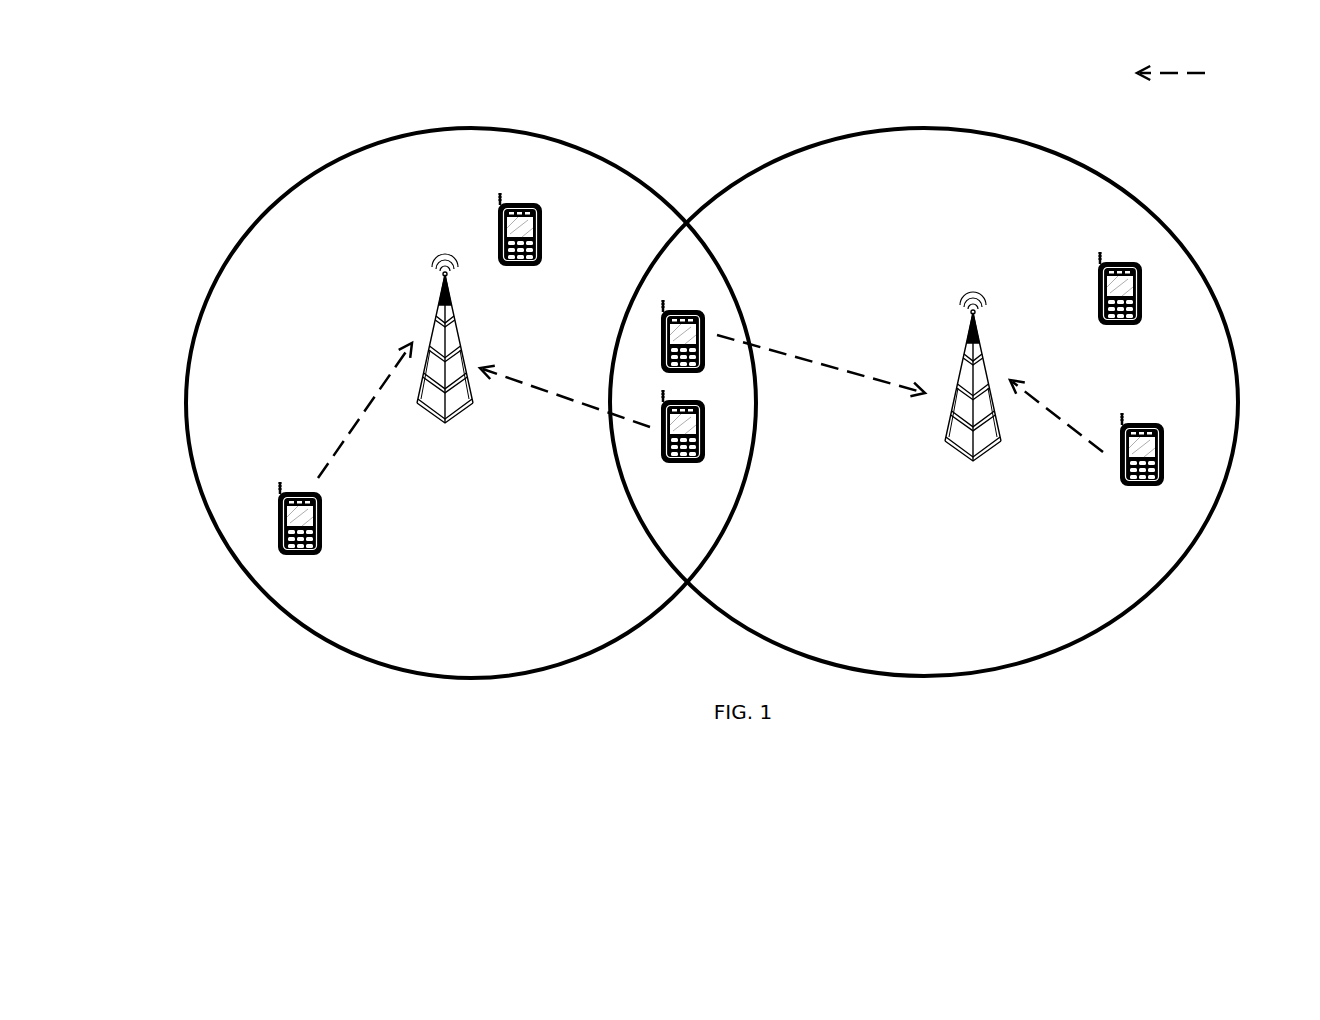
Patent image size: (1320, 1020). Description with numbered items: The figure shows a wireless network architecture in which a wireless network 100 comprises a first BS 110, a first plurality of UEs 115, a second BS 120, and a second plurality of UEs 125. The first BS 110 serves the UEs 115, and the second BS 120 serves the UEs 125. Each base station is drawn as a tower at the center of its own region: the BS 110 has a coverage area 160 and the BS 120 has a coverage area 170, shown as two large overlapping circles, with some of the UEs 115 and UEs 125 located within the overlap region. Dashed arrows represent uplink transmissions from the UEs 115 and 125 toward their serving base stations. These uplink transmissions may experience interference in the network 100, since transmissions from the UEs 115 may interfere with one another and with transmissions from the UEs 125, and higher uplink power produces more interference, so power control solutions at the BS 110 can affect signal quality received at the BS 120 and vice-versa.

The wireless network 100 is at (193, 108).
The first BS 110 is at (445, 250).
The first plurality of UEs 115 is at (517, 200).
The second BS 120 is at (968, 293).
The second plurality of UEs 125 is at (683, 310).
The coverage area 160 is at (449, 638).
The coverage area 170 is at (922, 651).